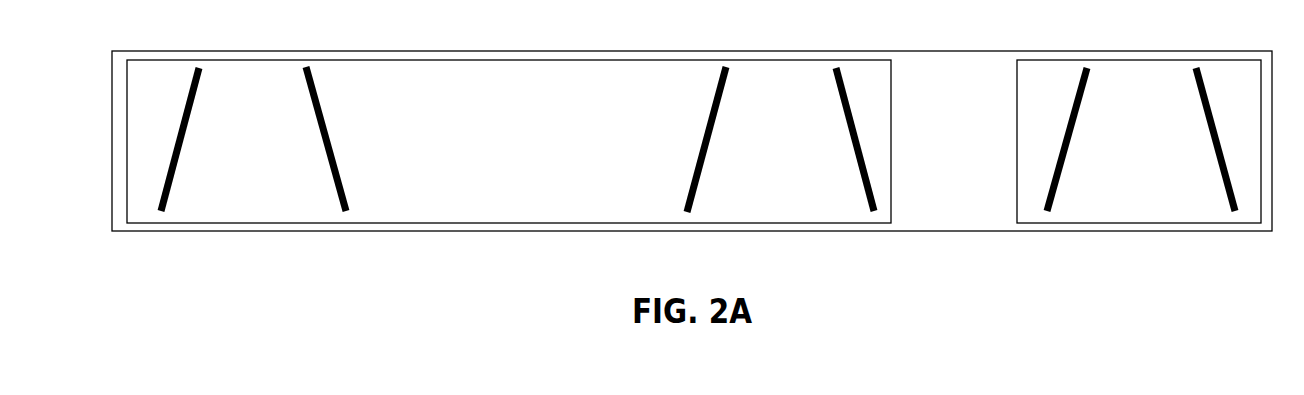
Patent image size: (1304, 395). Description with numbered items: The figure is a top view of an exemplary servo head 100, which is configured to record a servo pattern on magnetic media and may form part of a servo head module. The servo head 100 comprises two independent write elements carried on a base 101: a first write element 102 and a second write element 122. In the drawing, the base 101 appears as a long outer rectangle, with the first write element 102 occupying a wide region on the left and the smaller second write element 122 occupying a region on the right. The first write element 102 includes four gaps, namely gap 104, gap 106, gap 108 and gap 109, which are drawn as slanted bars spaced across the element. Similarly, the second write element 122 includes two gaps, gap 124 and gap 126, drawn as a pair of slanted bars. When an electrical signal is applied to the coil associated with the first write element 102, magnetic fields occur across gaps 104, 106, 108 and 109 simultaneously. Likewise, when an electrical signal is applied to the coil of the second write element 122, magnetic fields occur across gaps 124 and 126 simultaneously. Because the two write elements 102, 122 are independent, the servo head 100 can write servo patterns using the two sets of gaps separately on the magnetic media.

The servo head 100 is at (82, 108).
The base 101 is at (968, 150).
The write element 102 is at (548, 150).
The gap 104 is at (182, 138).
The gap 106 is at (330, 137).
The gap 108 is at (705, 138).
The gap 109 is at (852, 138).
The write element 122 is at (1158, 217).
The gap 124 is at (1072, 133).
The gap 126 is at (1203, 103).